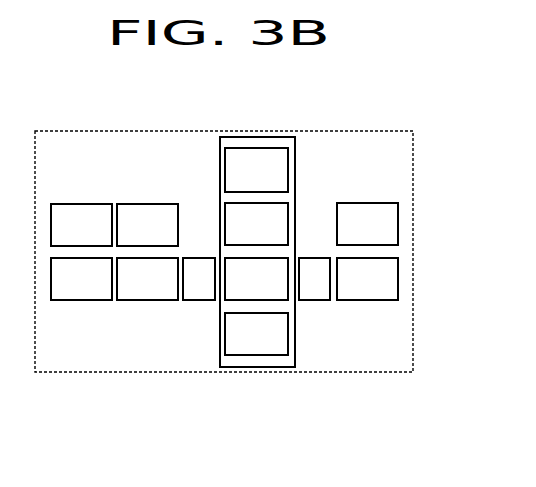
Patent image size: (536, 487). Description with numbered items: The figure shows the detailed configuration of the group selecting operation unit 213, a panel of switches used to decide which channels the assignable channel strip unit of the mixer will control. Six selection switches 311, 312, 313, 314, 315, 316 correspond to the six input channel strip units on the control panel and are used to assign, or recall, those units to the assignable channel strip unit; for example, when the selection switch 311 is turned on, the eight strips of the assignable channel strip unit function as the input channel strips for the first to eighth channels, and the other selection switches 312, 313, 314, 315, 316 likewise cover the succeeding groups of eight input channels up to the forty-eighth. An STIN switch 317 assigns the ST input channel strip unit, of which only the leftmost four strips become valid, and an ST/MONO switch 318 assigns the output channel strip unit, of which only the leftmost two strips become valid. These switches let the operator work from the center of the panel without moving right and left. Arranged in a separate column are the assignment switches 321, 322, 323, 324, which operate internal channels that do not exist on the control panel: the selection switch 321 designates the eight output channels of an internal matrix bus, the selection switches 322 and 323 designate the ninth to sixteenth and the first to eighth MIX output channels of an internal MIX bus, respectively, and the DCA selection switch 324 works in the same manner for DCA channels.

The group selecting operation unit 213 is at (225, 118).
The selection switch 311 is at (78, 300).
The selection switch 312 is at (145, 300).
The selection switch 313 is at (80, 204).
The selection switch 314 is at (146, 204).
The selection switch 315 is at (392, 273).
The selection switch 316 is at (392, 218).
The STIN switch 317 is at (200, 300).
The ST/MONO switch 318 is at (323, 298).
The selection switch 321 is at (282, 152).
The selection switch 322 is at (285, 207).
The selection switch 323 is at (283, 295).
The DCA selection switch 324 is at (258, 350).